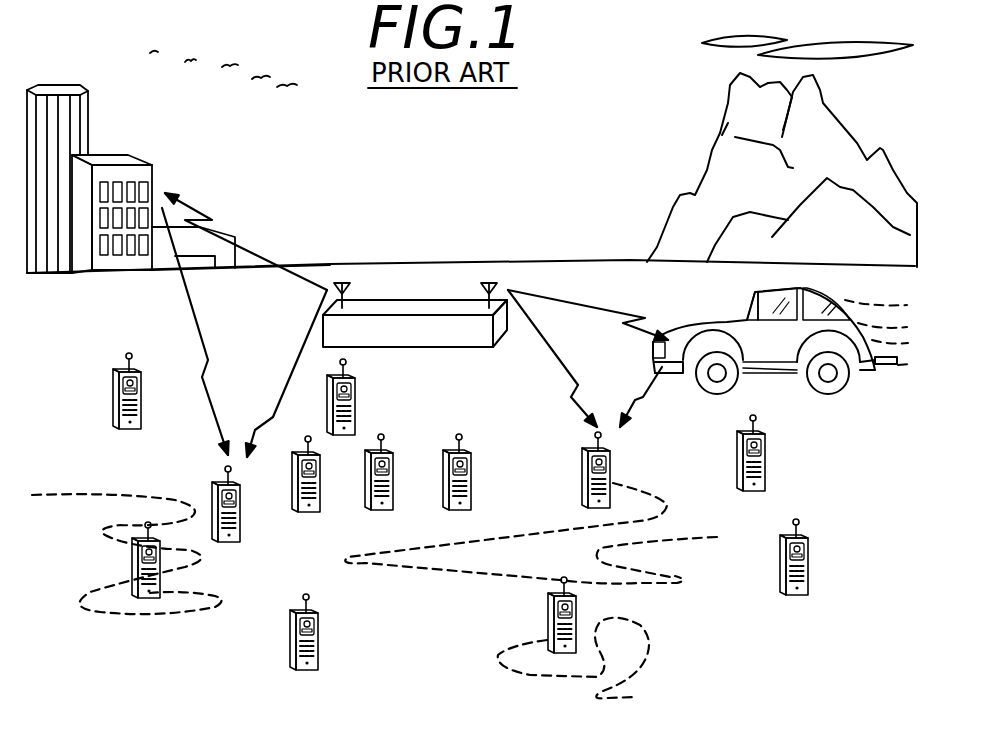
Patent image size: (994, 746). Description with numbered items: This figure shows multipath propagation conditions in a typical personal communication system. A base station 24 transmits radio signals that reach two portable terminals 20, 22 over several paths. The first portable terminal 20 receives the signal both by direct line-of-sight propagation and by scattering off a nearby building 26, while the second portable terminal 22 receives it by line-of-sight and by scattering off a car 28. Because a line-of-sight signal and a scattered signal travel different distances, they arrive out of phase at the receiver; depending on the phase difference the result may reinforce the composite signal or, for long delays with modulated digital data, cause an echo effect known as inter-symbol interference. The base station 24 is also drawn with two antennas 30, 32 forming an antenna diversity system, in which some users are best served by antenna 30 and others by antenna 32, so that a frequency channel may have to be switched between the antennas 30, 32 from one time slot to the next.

The portable terminal 20 is at (212, 493).
The portable terminal 22 is at (611, 470).
The base station 24 is at (415, 300).
The building 26 is at (128, 154).
The car 28 is at (697, 323).
The antenna 30 is at (343, 283).
The antenna 32 is at (490, 283).